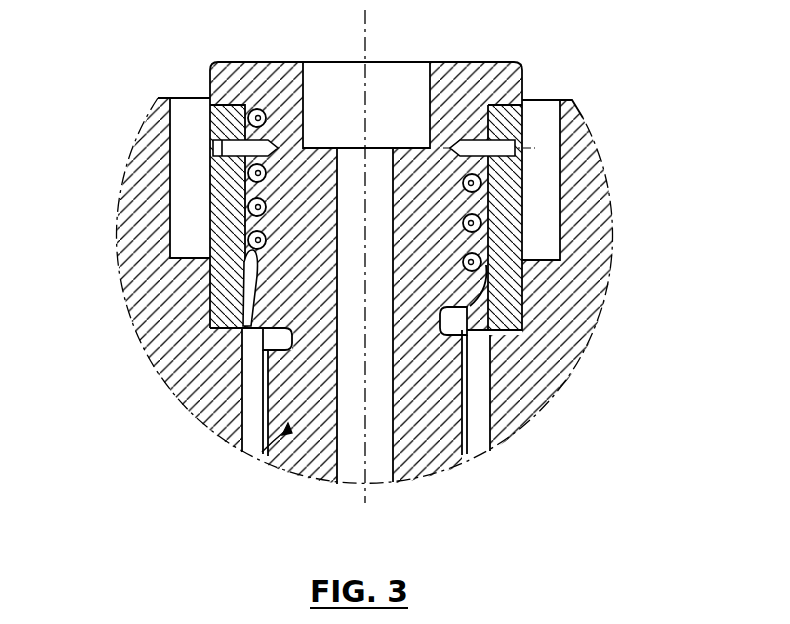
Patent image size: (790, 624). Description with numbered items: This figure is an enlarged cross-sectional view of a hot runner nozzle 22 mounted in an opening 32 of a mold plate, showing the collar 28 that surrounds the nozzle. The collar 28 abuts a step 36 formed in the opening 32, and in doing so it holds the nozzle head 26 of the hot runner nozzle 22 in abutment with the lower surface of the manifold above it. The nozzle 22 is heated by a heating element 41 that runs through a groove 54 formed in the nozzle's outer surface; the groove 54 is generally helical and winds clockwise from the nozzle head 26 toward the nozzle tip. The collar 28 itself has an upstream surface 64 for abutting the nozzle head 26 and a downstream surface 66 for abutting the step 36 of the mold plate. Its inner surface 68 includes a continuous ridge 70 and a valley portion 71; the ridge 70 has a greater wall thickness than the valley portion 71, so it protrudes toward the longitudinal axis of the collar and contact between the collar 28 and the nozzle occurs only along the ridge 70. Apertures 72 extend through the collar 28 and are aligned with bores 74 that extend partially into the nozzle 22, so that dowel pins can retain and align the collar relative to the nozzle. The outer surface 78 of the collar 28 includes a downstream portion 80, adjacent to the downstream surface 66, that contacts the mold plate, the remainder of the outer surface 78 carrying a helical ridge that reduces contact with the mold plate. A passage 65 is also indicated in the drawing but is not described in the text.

The hot runner nozzle 22 is at (263, 460).
The nozzle head 26 is at (524, 70).
The collar 28 is at (246, 240).
The opening 32 is at (545, 190).
The step 36 is at (522, 318).
The heating element 41 is at (505, 212).
The groove 54 is at (490, 264).
The upstream surface 64 is at (524, 84).
The fuel passage 65 is at (472, 434).
The downstream surface 66 is at (220, 330).
The inner surface 68 is at (254, 110).
The ridge 70 is at (492, 212).
The valley portion 71 is at (494, 232).
The apertures 72 is at (492, 131).
The bores 74 is at (497, 157).
The outer surface 78 is at (208, 196).
The downstream portion 80 is at (240, 316).